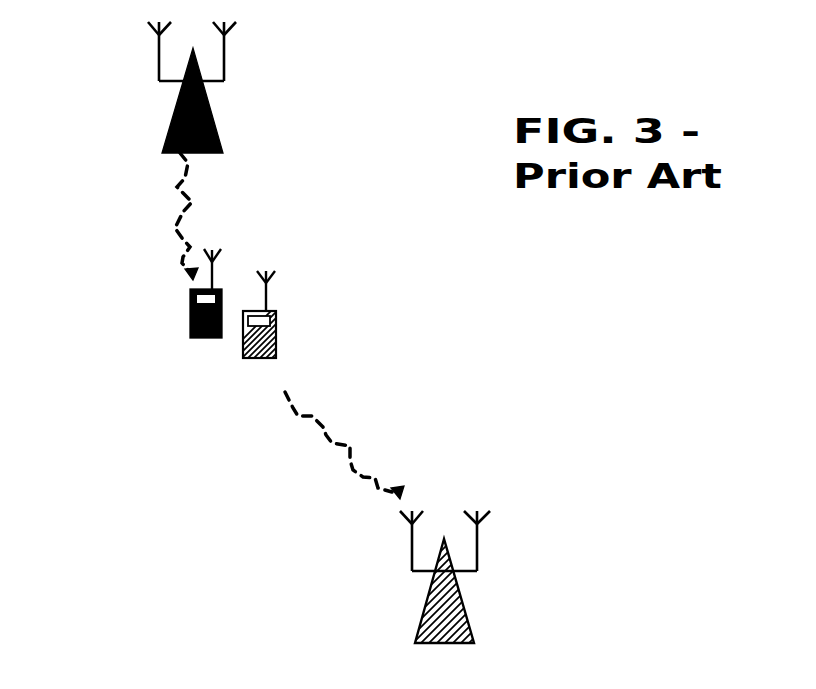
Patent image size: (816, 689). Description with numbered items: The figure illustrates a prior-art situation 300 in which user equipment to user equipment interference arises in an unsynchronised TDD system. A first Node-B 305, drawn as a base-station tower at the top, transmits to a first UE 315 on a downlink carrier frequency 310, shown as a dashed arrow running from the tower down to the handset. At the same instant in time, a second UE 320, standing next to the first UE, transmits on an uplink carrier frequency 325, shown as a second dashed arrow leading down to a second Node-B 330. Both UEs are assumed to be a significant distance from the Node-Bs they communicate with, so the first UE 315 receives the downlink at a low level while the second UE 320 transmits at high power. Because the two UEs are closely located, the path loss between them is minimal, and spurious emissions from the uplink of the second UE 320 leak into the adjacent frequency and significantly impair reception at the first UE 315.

The situation 300 is at (684, 400).
The first Node-B-1 305 is at (217, 122).
The downlink carrier frequency f0 310 is at (180, 200).
The first UE (UE-1) 315 is at (200, 337).
The second UE (UE-2) 320 is at (272, 338).
The uplink carrier frequency f1 325 is at (352, 445).
The Node-B-2 330 is at (465, 610).